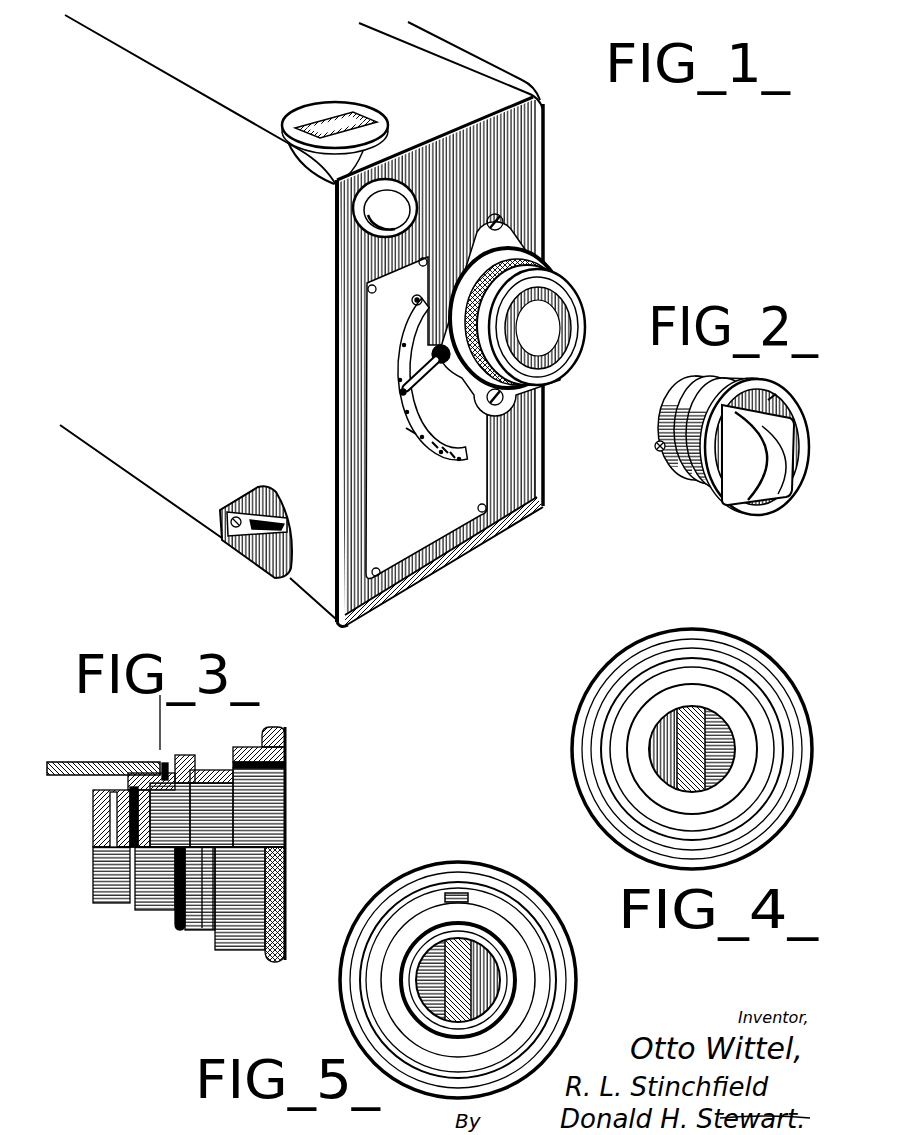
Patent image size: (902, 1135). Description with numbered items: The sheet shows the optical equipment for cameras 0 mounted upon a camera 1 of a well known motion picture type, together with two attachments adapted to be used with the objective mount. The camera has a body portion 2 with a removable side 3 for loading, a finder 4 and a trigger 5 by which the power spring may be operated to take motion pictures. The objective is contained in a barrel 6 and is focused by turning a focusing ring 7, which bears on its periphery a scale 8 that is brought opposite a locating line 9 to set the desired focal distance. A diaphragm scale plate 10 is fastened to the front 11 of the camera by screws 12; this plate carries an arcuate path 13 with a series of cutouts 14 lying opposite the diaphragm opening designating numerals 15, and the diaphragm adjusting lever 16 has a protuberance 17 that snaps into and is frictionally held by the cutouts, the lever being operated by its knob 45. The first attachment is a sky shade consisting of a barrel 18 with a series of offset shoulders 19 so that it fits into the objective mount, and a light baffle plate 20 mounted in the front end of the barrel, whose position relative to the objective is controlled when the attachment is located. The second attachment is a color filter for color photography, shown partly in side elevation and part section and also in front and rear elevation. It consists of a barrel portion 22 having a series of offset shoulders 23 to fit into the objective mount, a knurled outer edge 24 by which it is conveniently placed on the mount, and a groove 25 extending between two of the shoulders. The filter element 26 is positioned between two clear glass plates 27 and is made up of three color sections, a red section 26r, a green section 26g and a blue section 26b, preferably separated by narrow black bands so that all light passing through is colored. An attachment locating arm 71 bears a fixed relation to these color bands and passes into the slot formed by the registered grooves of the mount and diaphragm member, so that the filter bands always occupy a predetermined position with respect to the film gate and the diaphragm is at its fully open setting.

In FIG. 1, the optical equipment for cameras 0 is at (520, 260).
In FIG. 1, the camera 1 is at (198, 317).
In FIG. 1, the body portion 2 is at (451, 73).
In FIG. 1, the removable side 3 is at (493, 72).
In FIG. 1, the finder 4 is at (335, 116).
In FIG. 1, the trigger 5 is at (257, 538).
In FIG. 1, the barrel 6 is at (578, 348).
In FIG. 1, the focusing ring 7 is at (553, 291).
In FIG. 1, the scale 8 is at (545, 384).
In FIG. 1, the locating line 9 is at (580, 311).
In FIG. 1, the diaphragm scale plate 10 is at (426, 418).
In FIG. 1, the front 11 is at (462, 545).
In FIG. 1, the screws 12 is at (472, 500).
In FIG. 1, the arcuate path 13 is at (420, 424).
In FIG. 1, the cutouts 14 is at (443, 441).
In FIG. 1, the diaphragm opening designating numerals 15 is at (405, 430).
In FIG. 1, the diaphragm adjusting lever 16 is at (428, 378).
In FIG. 1, the protuberance 17 is at (400, 389).
In FIG. 2, the barrel 18 is at (732, 352).
In FIG. 2, the offset shoulders 19 is at (697, 486).
In FIG. 2, the light baffle plate 20 is at (770, 404).
In FIG. 3, the barrel portion 22 is at (286, 821).
In FIG. 4, the barrel portion 22 is at (708, 634).
In FIG. 5, the barrel portion 22 is at (388, 890).
In FIG. 3, the offset shoulders 23 is at (236, 748).
In FIG. 5, the offset shoulders 23 is at (532, 957).
In FIG. 3, the knurled outer edge 24 is at (286, 886).
In FIG. 4, the knurled outer edge 24 is at (772, 823).
In FIG. 5, the knurled outer edge 24 is at (546, 910).
In FIG. 3, the groove 25 is at (208, 930).
In FIG. 3, the filter element 26 is at (97, 812).
In FIG. 4, the red color section 26r is at (660, 721).
In FIG. 5, the red color section 26r is at (500, 993).
In FIG. 4, the green color section 26g is at (705, 715).
In FIG. 5, the green color section 26g is at (466, 930).
In FIG. 4, the blue color section 26b is at (735, 734).
In FIG. 5, the blue color section 26b is at (416, 996).
In FIG. 3, the clear glass plates 27 is at (96, 838).
In FIG. 4, the clear glass plates 27 is at (670, 735).
In FIG. 5, the clear glass plates 27 is at (418, 960).
In FIG. 1, the lever knob 45 is at (432, 354).
In FIG. 3, the attachment locating arm 71 is at (107, 757).
In FIG. 5, the attachment locating arm 71 is at (462, 888).